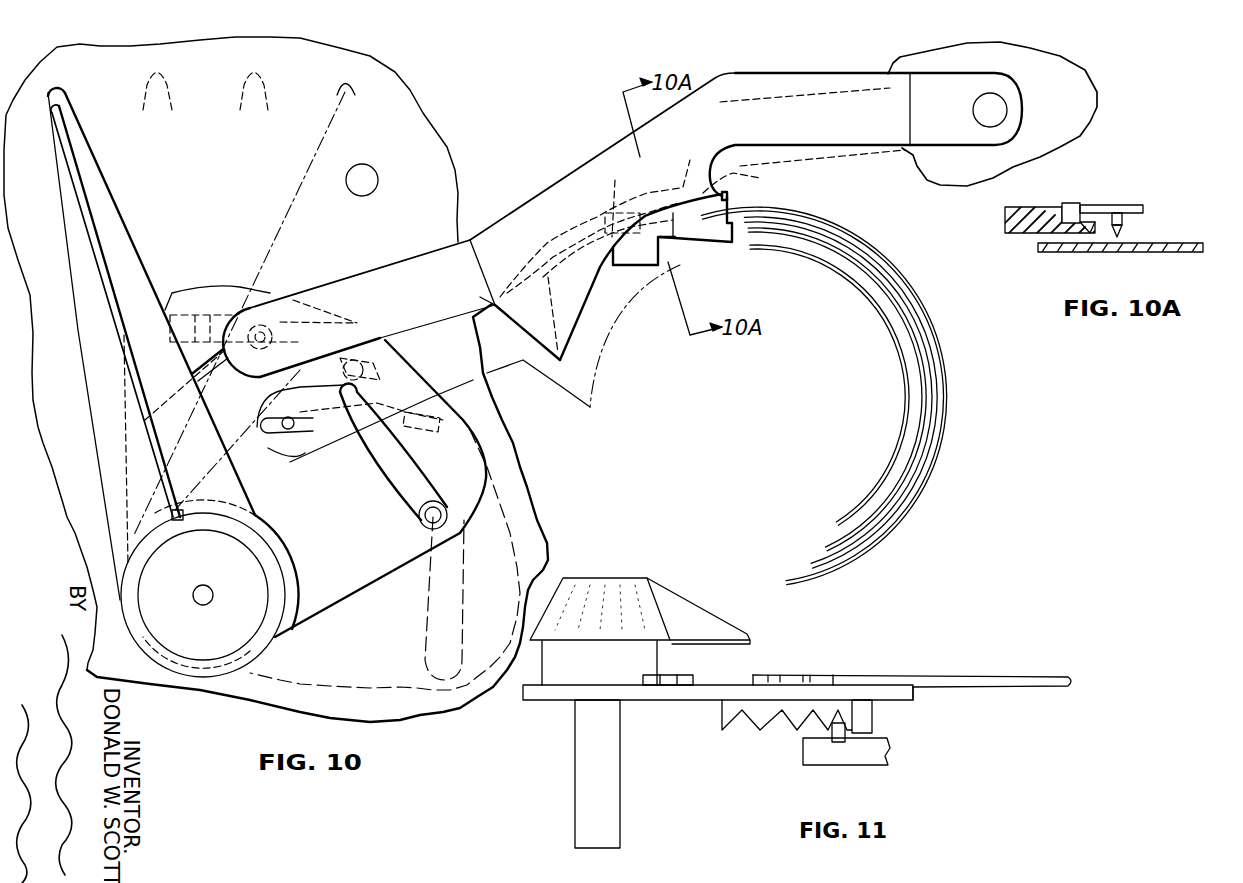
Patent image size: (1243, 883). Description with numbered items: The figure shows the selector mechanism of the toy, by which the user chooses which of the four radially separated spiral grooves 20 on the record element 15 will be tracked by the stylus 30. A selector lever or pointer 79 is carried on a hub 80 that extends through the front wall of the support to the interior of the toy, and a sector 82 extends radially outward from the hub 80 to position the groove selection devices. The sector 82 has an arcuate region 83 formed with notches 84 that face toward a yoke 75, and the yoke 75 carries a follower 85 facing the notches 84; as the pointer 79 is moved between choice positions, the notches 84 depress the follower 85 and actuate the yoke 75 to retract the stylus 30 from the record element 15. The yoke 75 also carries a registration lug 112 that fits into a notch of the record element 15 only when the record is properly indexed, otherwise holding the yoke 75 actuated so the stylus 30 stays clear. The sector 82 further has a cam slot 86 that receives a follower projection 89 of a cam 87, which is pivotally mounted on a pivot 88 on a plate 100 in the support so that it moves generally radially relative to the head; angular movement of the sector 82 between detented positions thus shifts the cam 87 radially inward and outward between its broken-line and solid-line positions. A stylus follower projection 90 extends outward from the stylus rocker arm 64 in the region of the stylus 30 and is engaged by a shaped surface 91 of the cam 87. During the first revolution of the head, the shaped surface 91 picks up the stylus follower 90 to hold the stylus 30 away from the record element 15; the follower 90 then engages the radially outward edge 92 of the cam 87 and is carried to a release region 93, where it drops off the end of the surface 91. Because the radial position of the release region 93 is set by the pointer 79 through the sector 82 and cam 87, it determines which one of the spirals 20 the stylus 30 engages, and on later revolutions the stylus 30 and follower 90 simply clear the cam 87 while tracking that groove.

In FIG. 10A, the record element 15 is at (1191, 252).
In FIG. 10, the spiral grooves 20 is at (887, 263).
In FIG. 10, the stylus 30 is at (700, 218).
In FIG. 10A, the stylus 30 is at (1124, 229).
In FIG. 10, the stylus rocker arm 64 is at (627, 257).
In FIG. 10A, the stylus rocker arm 64 is at (1130, 207).
In FIG. 11, the yoke 75 is at (850, 757).
In FIG. 10, the selector lever or pointer 79 is at (60, 205).
In FIG. 11, the selector lever or pointer 79 is at (700, 608).
In FIG. 10, the hub 80 is at (198, 602).
In FIG. 11, the hub 80 is at (585, 768).
In FIG. 10, the sector 82 is at (371, 488).
In FIG. 11, the sector 82 is at (820, 693).
In FIG. 10, the arcuate region 83 is at (217, 293).
In FIG. 11, the arcuate region 83 is at (907, 687).
In FIG. 10, the notches 84 is at (278, 297).
In FIG. 11, the notches 84 is at (742, 723).
In FIG. 11, the follower 85 is at (838, 733).
In FIG. 10, the cam slot 86 is at (216, 372).
In FIG. 11, the cam slot 86 is at (633, 690).
In FIG. 10, the cam 87 is at (528, 217).
In FIG. 11, the cam 87 is at (1020, 682).
In FIG. 10, the pivot 88 is at (1000, 110).
In FIG. 10, the follower projection 89 is at (300, 293).
In FIG. 11, the follower projection 89 is at (777, 683).
In FIG. 10, the stylus follower projection 90 is at (687, 187).
In FIG. 10A, the stylus follower projection 90 is at (1073, 205).
In FIG. 10, the shaped surface 91 is at (572, 292).
In FIG. 10A, the shaped surface 91 is at (1090, 226).
In FIG. 10, the radially outward edge 92 is at (620, 192).
In FIG. 10A, the radially outward edge 92 is at (1058, 208).
In FIG. 10, the release region 93 is at (723, 193).
In FIG. 10, the plate 100 is at (432, 125).
In FIG. 10, the registration lug 112 is at (425, 520).